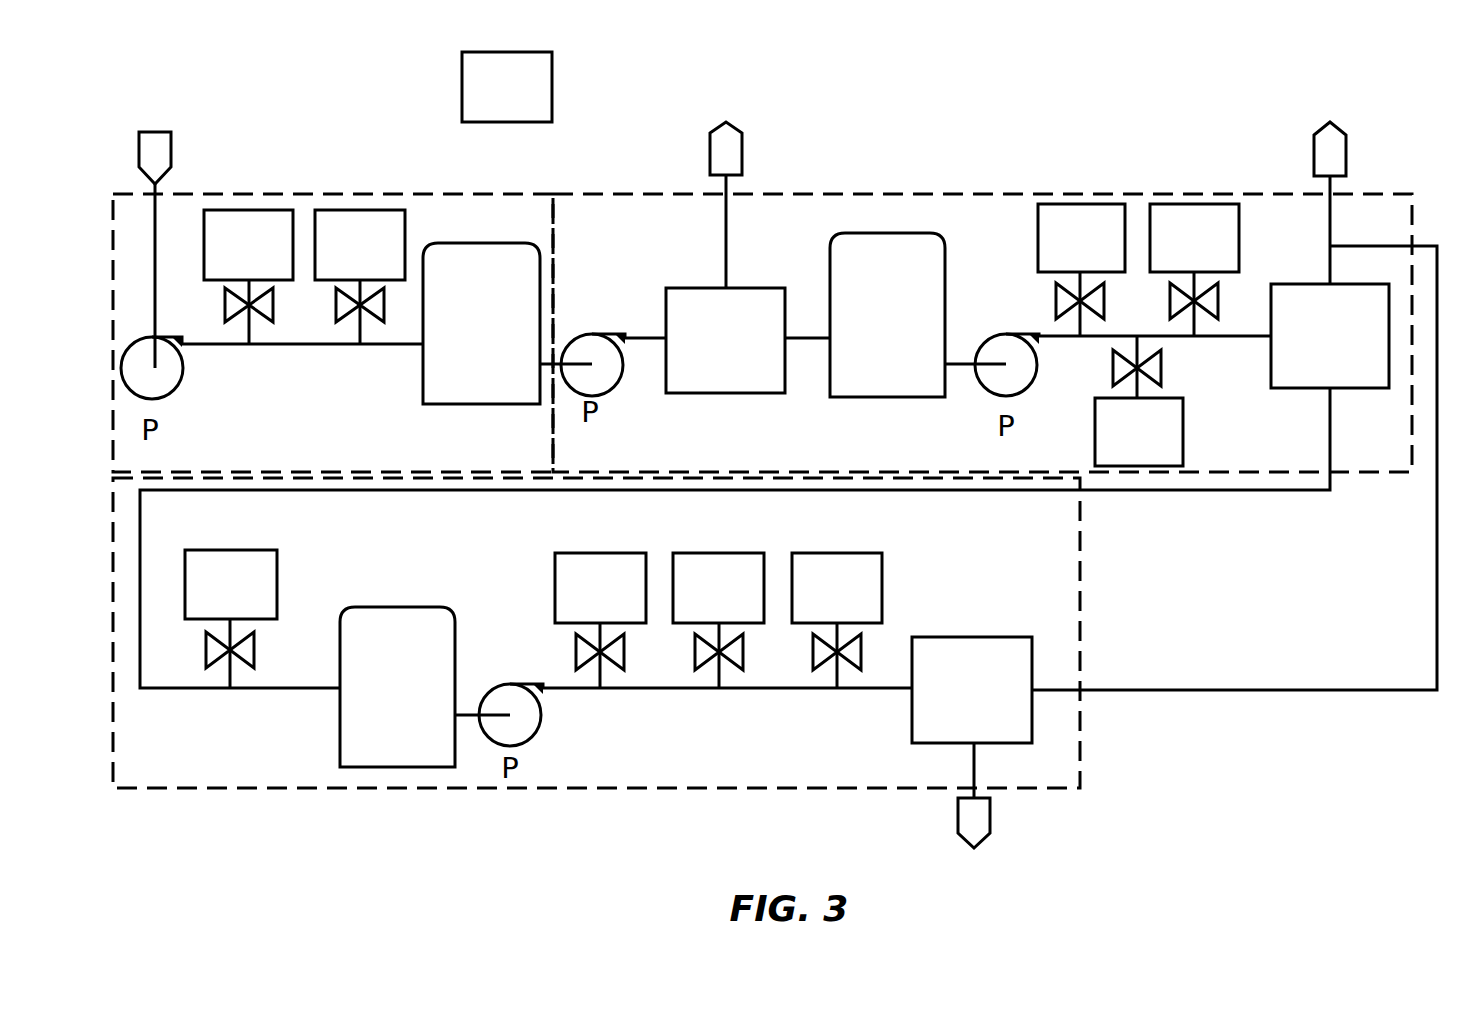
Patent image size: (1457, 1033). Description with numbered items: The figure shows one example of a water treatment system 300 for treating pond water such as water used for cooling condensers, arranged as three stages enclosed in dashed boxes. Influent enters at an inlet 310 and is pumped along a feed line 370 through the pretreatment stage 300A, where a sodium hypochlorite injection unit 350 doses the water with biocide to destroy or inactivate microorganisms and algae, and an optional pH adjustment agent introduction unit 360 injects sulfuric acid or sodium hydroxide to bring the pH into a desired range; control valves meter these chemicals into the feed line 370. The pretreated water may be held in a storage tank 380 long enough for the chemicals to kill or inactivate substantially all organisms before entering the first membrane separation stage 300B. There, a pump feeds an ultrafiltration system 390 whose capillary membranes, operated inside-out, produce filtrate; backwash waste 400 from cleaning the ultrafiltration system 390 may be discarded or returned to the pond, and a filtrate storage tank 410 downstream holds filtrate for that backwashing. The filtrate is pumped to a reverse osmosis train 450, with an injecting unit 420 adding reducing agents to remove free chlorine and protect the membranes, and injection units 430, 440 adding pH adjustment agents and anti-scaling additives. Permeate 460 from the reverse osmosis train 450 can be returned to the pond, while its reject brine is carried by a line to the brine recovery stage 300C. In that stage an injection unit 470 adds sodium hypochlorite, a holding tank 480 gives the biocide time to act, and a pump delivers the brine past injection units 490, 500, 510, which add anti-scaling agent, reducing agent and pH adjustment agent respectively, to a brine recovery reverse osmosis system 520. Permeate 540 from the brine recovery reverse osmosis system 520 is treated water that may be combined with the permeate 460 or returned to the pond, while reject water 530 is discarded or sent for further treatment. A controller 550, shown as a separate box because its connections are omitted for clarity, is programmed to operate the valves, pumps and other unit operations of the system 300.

The water treatment system 300 is at (1000, 80).
The pretreatment stage 300A is at (333, 312).
The first membrane separation stage 300B is at (982, 308).
The brine recovery stage 300C is at (596, 658).
The feed inlet 310 is at (160, 230).
The sodium hypochlorite injection unit 350 is at (222, 261).
The pH adjustment agent introduction unit 360 is at (334, 261).
The feed line 370 is at (313, 344).
The storage tank 380 is at (456, 343).
The ultrafiltration system 390 is at (699, 354).
The backwash waste 400 is at (716, 189).
The filtrate storage tank 410 is at (862, 339).
The injecting unit 420 is at (1056, 254).
The injection unit 430 is at (1169, 254).
The injection unit 440 is at (1113, 448).
The reverse osmosis train 450 is at (1304, 352).
The permeate 460 is at (1326, 181).
The injection unit 470 is at (205, 601).
The holding tank 480 is at (372, 696).
The injection unit 490 is at (574, 604).
The injection unit 500 is at (692, 604).
The injection unit 510 is at (811, 604).
The brine recovery reverse osmosis system 520 is at (946, 706).
The reject water 530 is at (969, 817).
The permeate 540 is at (1435, 538).
The controller 550 is at (481, 103).